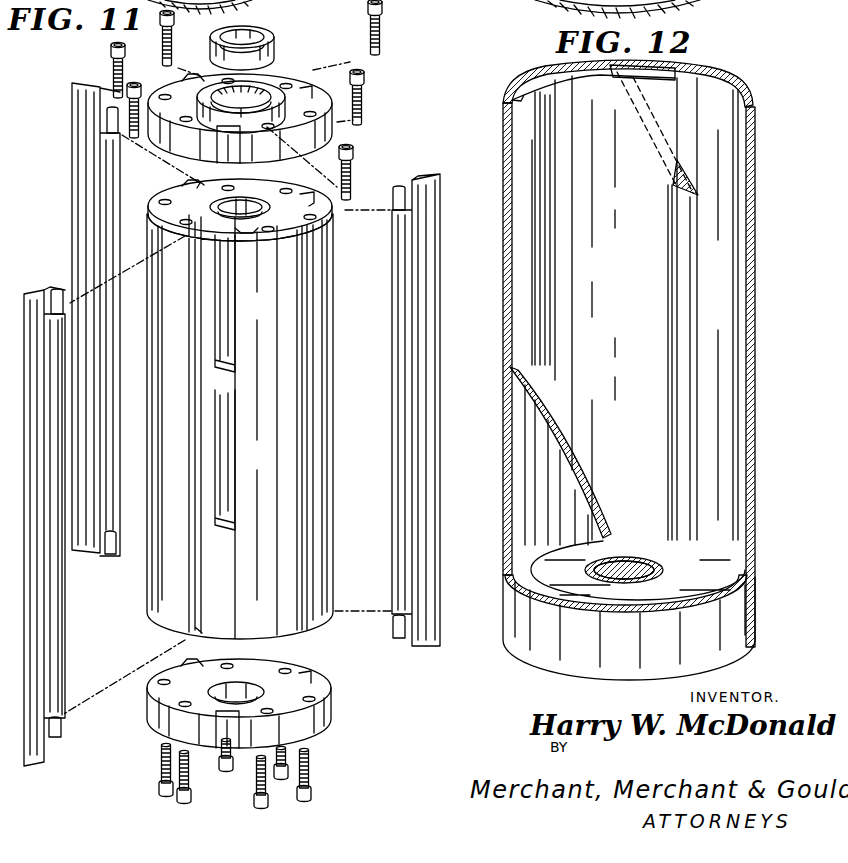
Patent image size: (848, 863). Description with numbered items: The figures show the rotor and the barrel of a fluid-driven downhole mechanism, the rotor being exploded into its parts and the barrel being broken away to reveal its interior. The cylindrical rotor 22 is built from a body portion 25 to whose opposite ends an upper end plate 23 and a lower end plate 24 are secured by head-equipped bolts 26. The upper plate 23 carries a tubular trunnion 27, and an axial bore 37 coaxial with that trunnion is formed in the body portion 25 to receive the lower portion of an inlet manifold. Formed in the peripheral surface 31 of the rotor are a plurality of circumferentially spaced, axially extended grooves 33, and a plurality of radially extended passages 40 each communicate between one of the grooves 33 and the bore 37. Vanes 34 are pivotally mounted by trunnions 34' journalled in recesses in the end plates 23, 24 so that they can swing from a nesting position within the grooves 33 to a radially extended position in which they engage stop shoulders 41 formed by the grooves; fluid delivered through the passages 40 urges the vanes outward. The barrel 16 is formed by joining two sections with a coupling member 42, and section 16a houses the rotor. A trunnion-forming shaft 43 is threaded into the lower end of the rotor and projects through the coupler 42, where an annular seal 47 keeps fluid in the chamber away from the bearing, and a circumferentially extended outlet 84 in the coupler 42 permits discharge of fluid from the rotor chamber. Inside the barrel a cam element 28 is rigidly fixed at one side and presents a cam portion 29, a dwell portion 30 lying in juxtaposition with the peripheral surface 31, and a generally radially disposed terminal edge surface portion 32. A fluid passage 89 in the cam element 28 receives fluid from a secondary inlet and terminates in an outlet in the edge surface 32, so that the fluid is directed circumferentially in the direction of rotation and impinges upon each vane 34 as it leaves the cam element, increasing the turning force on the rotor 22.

In FIG. 12, the barrel 16 is at (757, 208).
In FIG. 12, the barrel section 16a is at (752, 287).
In FIG. 11, the cylindrical rotor 22 is at (337, 338).
In FIG. 11, the upper end plate 23 is at (288, 78).
In FIG. 11, the lower end plate 24 is at (293, 667).
In FIG. 11, the body portion 25 is at (333, 450).
In FIG. 11, the head-equipped bolts 26 is at (163, 25).
In FIG. 11, the trunnion 27 is at (248, 90).
In FIG. 12, the cam element 28 is at (531, 163).
In FIG. 12, the cam portion 29 is at (519, 198).
In FIG. 12, the dwell portion 30 is at (631, 310).
In FIG. 11, the peripheral surface 31 is at (312, 404).
In FIG. 12, the terminal edge surface portion 32 is at (688, 313).
In FIG. 11, the grooves 33 is at (185, 186).
In FIG. 11, the vanes 34 is at (255, 424).
In FIG. 11, the trunnions 34' is at (238, 422).
In FIG. 11, the axial bore 37 is at (310, 199).
In FIG. 11, the radially extended passages 40 is at (232, 207).
In FIG. 11, the stop shoulders 41 is at (200, 184).
In FIG. 12, the coupling member 42 is at (722, 575).
In FIG. 12, the trunnion-forming shaft 43 is at (663, 572).
In FIG. 12, the annular seal 47 is at (590, 569).
In FIG. 12, the circumferentially extended outlet 84 is at (513, 580).
In FIG. 12, the fluid passage 89 is at (678, 70).